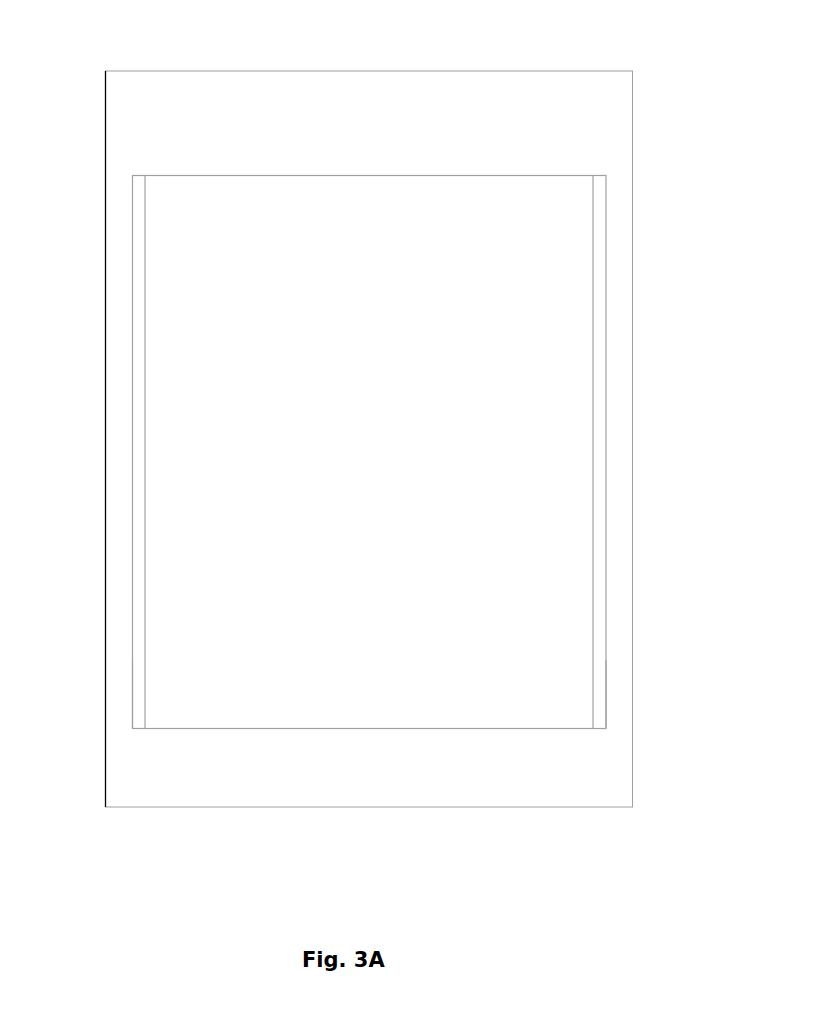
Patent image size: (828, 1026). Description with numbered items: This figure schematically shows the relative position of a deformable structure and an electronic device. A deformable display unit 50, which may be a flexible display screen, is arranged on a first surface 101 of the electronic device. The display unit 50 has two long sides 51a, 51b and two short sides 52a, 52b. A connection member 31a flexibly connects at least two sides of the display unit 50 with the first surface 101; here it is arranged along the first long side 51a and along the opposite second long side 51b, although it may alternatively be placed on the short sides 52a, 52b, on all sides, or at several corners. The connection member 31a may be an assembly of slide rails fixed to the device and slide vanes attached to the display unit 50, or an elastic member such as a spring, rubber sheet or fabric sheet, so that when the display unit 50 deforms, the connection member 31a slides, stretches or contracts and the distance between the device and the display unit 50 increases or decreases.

The first surface 101 is at (146, 112).
The display unit 50 is at (569, 270).
The long side 51a is at (146, 450).
The long side 51b is at (593, 452).
The short side 52a is at (498, 175).
The short side 52b is at (368, 728).
The connection member 31a is at (140, 675).